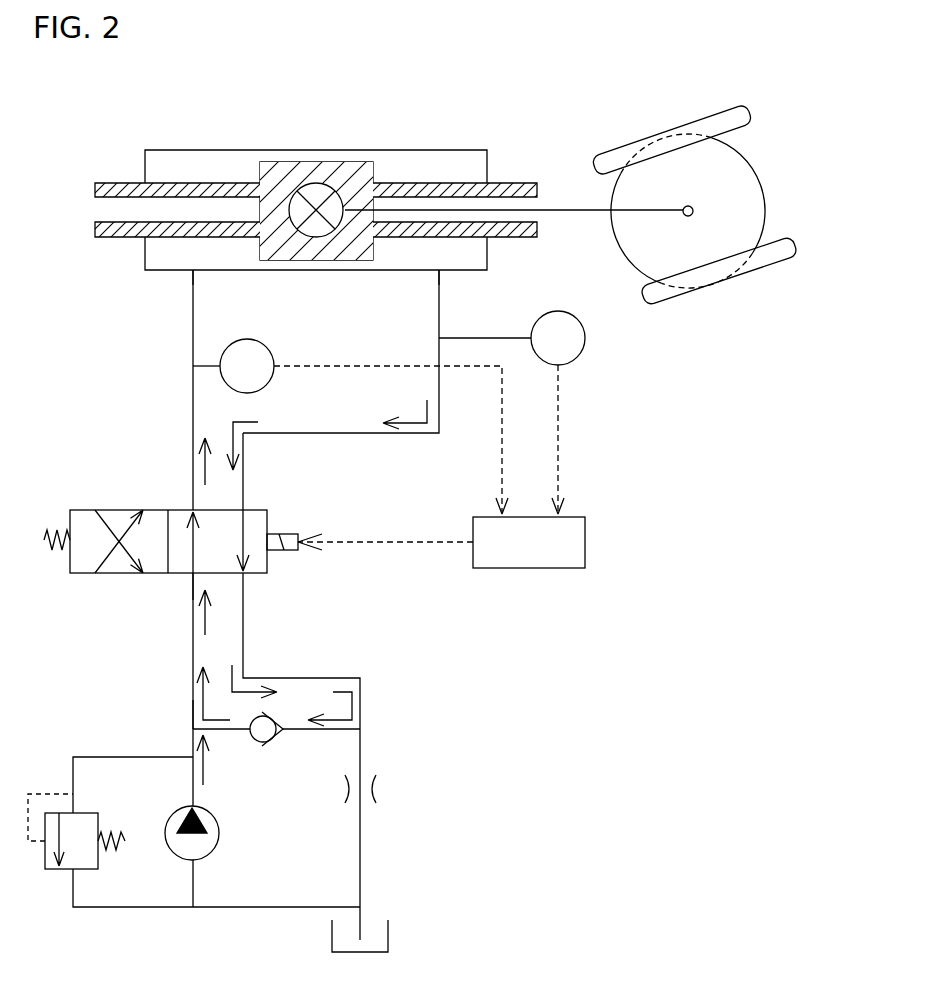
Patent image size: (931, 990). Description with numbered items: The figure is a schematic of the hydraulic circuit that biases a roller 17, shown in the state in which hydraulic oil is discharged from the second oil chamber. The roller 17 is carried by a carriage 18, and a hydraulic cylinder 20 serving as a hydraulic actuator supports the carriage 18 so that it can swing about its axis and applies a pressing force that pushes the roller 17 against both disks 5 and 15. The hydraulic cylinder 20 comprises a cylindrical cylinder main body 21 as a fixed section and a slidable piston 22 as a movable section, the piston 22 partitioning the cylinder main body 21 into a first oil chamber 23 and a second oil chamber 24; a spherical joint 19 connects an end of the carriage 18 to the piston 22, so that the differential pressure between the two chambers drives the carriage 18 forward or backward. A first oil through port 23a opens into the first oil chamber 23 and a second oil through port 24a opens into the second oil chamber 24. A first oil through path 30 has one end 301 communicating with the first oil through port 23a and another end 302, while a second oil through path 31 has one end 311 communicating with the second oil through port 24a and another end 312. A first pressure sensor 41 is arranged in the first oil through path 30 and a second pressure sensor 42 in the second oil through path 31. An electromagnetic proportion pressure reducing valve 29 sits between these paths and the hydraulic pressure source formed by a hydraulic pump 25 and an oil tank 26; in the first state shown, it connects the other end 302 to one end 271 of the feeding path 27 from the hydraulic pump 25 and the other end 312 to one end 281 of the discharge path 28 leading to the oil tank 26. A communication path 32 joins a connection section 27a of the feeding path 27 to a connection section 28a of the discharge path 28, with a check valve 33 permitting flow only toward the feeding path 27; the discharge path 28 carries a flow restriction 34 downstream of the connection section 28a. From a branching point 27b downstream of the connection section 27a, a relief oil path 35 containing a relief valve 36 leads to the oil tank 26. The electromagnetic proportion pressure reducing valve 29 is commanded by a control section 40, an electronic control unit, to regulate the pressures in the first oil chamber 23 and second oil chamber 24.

The disk 5 is at (715, 118).
The disk 15 is at (765, 268).
The roller 17 is at (742, 170).
The carriage 18 is at (557, 210).
The joint 19 is at (316, 183).
The hydraulic cylinder 20 is at (247, 138).
The cylinder main body 21 is at (405, 150).
The piston 22 is at (340, 162).
The first oil chamber 23 is at (185, 150).
The first oil through port 23a is at (190, 272).
The second oil chamber 24 is at (460, 150).
The second oil through port 24a is at (438, 272).
The hydraulic pump 25 is at (219, 833).
The oil tank 26 is at (390, 934).
The feeding path 27 is at (193, 662).
The connection section 27a is at (193, 727).
The branching point 27b is at (193, 757).
The discharge path 28 is at (243, 657).
The connection section 28a is at (360, 729).
The electromagnetic proportion pressure reducing valve 29 is at (268, 522).
The first oil through path 30 is at (193, 414).
The second oil through path 31 is at (378, 434).
The communication path 32 is at (318, 733).
The check valve 33 is at (260, 745).
The flow restriction 34 is at (376, 787).
The relief oil path 35 is at (87, 757).
The relief valve 36 is at (50, 870).
The control section 40 is at (586, 542).
The first pressure sensor 41 is at (273, 352).
The second pressure sensor 42 is at (580, 355).
The one end of the feeding path 271 is at (193, 575).
The one end of the discharge path 281 is at (243, 575).
The one end of the first oil through path 301 is at (193, 318).
The other end of the first oil through path 302 is at (193, 508).
The one end of the second oil through path 311 is at (440, 308).
The other end of the second oil through path 312 is at (246, 508).